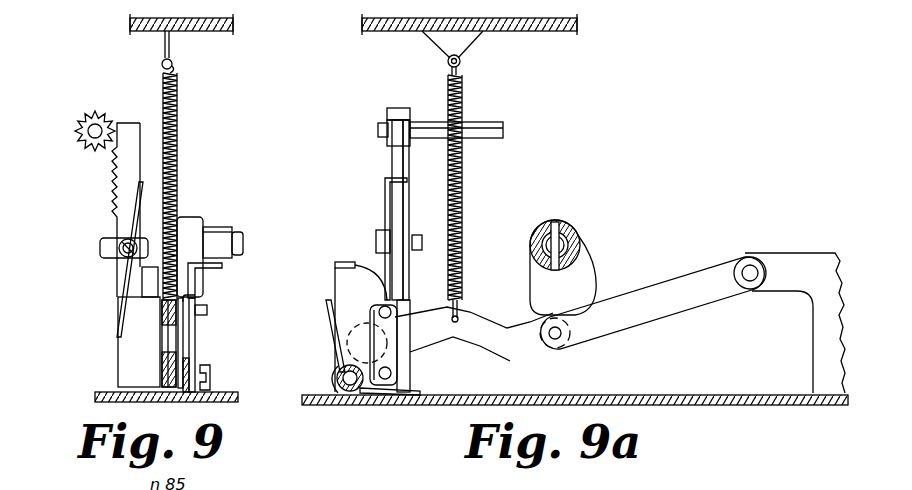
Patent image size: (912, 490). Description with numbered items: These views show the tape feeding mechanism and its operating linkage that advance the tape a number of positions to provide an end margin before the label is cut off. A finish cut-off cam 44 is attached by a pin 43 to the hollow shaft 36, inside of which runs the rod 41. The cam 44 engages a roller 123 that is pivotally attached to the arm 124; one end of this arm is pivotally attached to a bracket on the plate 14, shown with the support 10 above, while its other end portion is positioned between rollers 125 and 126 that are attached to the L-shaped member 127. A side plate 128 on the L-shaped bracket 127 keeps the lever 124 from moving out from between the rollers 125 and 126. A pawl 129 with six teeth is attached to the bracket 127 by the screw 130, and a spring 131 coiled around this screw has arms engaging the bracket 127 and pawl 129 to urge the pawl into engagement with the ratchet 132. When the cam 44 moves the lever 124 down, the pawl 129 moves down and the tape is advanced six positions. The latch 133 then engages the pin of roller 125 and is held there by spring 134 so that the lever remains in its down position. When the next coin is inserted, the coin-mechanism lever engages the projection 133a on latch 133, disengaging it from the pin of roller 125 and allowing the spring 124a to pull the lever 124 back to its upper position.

In FIG. 9, the overhead support 10 is at (196, 31).
In FIG. 9A, the overhead support 10 is at (532, 31).
In FIG. 9, the plate 14 is at (100, 399).
In FIG. 9A, the plate 14 is at (733, 396).
In FIG. 9, the shaft 36 is at (221, 227).
In FIG. 9A, the shaft 36 is at (565, 232).
In FIG. 9, the rod 41 is at (243, 238).
In FIG. 9A, the rod 41 is at (570, 235).
In FIG. 9A, the pin 43 is at (557, 220).
In FIG. 9, the finish cut-off cam 44 is at (190, 217).
In FIG. 9A, the finish cut-off cam 44 is at (593, 257).
In FIG. 9A, the roller 123 is at (566, 342).
In FIG. 9A, the arm 124 is at (666, 320).
In FIG. 9, the spring 124a is at (179, 118).
In FIG. 9A, the spring 124a is at (465, 192).
In FIG. 9A, the roller 125 is at (378, 302).
In FIG. 9A, the roller 126 is at (393, 395).
In FIG. 9, the L-shaped member 127 is at (118, 367).
In FIG. 9A, the L-shaped member 127 is at (411, 375).
In FIG. 9, the side plate 128 is at (179, 328).
In FIG. 9A, the side plate 128 is at (403, 350).
In FIG. 9, the pawl 129 is at (128, 165).
In FIG. 9A, the pawl 129 is at (392, 167).
In FIG. 9, the screw 130 is at (100, 247).
In FIG. 9A, the screw 130 is at (376, 233).
In FIG. 9, the spring 131 is at (116, 287).
In FIG. 9A, the spring 131 is at (384, 197).
In FIG. 9, the ratchet 132 is at (80, 119).
In FIG. 9A, the ratchet 132 is at (387, 109).
In FIG. 9A, the latch 133 is at (340, 291).
In FIG. 9, the projection 133a is at (218, 269).
In FIG. 9A, the projection 133a is at (343, 261).
In FIG. 9, the spring 134 is at (196, 348).
In FIG. 9A, the spring 134 is at (395, 317).